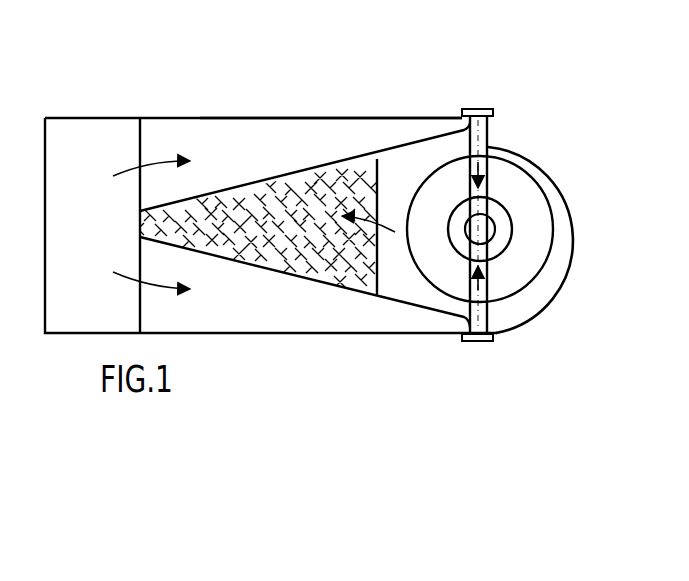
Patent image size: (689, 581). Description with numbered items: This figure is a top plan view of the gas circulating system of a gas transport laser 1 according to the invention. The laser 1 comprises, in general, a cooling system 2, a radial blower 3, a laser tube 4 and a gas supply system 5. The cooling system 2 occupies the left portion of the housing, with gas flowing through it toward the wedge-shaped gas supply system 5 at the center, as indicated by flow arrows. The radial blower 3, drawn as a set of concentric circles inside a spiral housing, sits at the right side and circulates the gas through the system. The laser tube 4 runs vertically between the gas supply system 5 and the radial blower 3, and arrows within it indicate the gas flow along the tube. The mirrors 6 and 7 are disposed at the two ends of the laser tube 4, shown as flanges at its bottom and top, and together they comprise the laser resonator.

The gas transport laser 1 is at (397, 103).
The cooling system 2 is at (218, 213).
The radial blower 3 is at (530, 205).
The laser tube 4 is at (478, 140).
The gas supply system 5 is at (258, 155).
The mirror 6 is at (483, 343).
The mirror 7 is at (483, 109).